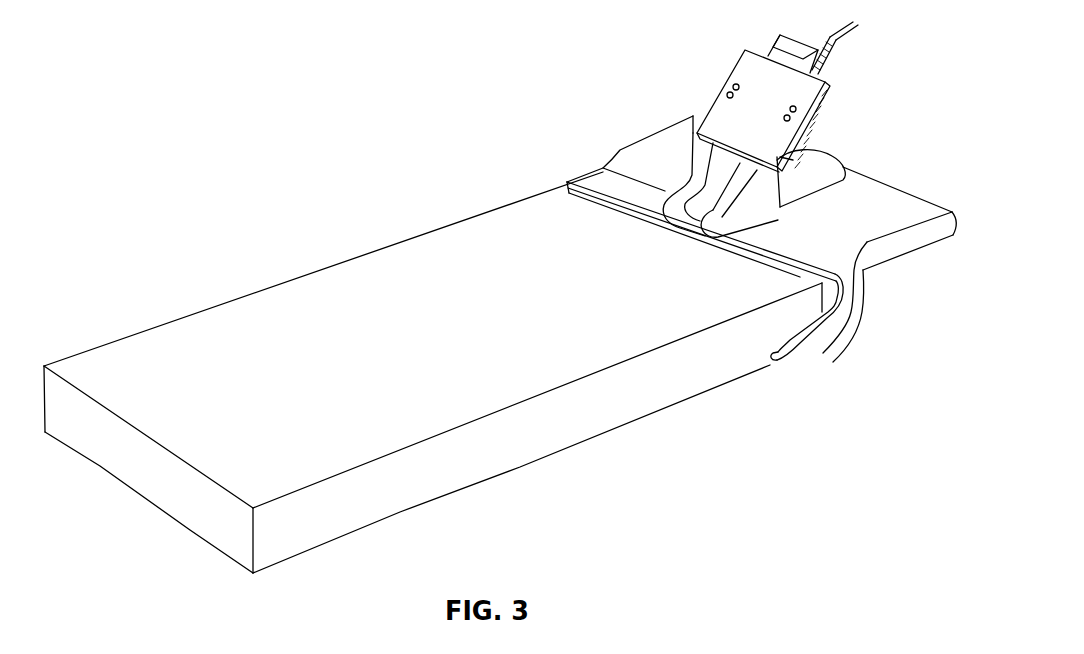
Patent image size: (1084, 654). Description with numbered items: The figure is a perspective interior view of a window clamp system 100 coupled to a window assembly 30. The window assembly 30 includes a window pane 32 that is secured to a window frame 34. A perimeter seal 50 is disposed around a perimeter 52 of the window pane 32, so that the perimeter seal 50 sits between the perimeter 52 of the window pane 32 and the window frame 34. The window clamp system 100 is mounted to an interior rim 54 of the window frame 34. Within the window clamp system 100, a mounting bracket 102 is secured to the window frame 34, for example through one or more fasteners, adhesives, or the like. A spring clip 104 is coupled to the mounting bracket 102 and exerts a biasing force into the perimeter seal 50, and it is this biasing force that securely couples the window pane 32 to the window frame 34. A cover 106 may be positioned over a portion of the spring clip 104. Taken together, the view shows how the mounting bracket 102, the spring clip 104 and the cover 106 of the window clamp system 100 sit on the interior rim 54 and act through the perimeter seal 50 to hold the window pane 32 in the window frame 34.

The window assembly 30 is at (121, 307).
The window pane 32 is at (488, 457).
The window frame 34 is at (903, 257).
The perimeter seal 50 is at (760, 257).
The perimeter 52 is at (792, 323).
The interior rim 54 is at (900, 212).
The window clamp system 100 is at (843, 28).
The mounting bracket 102 is at (813, 177).
The spring clip 104 is at (776, 50).
The cover 106 is at (722, 117).